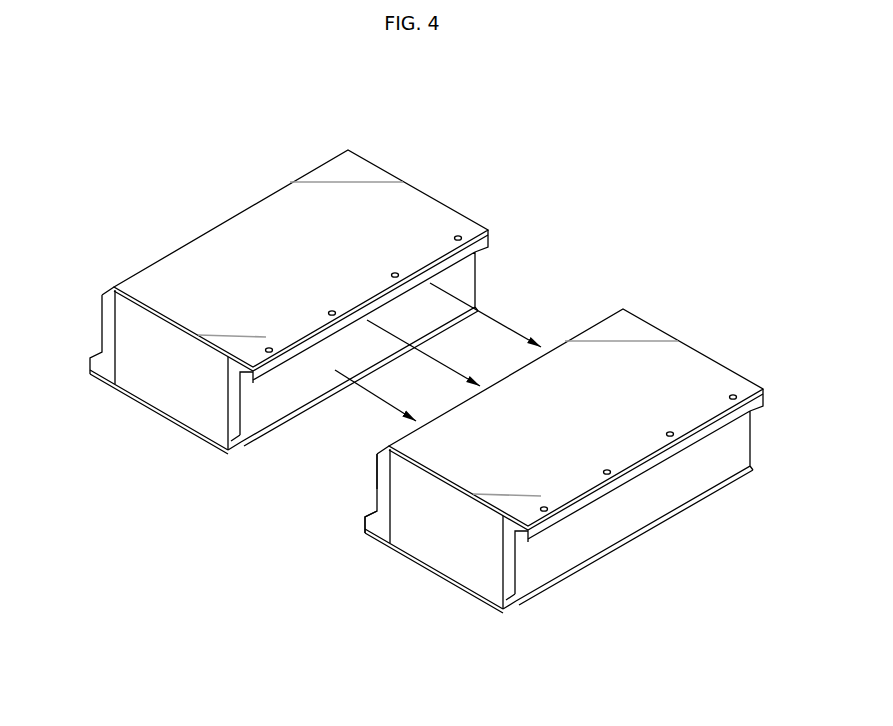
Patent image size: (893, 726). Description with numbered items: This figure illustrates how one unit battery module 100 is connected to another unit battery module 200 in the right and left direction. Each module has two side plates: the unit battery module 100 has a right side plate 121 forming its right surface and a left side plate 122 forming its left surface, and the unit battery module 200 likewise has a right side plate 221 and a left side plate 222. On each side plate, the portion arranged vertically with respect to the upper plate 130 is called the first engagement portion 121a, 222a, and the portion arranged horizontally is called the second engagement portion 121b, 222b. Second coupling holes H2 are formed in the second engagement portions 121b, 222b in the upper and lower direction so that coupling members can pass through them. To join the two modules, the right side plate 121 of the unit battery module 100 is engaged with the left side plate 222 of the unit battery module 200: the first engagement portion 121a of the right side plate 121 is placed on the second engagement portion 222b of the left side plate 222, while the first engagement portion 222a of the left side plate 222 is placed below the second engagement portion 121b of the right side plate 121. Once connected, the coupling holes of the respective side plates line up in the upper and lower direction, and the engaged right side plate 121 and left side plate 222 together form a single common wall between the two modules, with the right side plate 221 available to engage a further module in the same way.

The unit battery module 100 is at (270, 294).
The upper plate 130 is at (413, 195).
The second coupling holes H2 is at (461, 236).
The right side plate 121 is at (264, 386).
The first engagement portion 121a is at (253, 415).
The second engagement portion 121b is at (282, 357).
The left side plate 122 is at (88, 316).
The unit battery module 200 is at (519, 426).
The right side plate 221 is at (514, 519).
The left side plate 222 is at (332, 514).
The first engagement portion 222a is at (344, 472).
The second engagement portion 222b is at (359, 546).